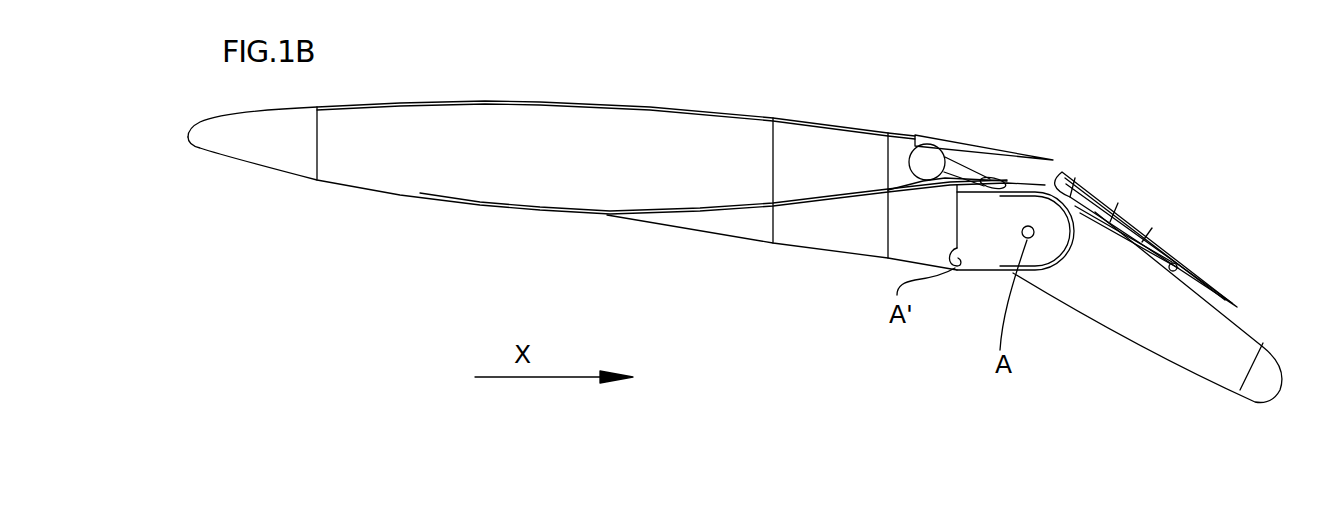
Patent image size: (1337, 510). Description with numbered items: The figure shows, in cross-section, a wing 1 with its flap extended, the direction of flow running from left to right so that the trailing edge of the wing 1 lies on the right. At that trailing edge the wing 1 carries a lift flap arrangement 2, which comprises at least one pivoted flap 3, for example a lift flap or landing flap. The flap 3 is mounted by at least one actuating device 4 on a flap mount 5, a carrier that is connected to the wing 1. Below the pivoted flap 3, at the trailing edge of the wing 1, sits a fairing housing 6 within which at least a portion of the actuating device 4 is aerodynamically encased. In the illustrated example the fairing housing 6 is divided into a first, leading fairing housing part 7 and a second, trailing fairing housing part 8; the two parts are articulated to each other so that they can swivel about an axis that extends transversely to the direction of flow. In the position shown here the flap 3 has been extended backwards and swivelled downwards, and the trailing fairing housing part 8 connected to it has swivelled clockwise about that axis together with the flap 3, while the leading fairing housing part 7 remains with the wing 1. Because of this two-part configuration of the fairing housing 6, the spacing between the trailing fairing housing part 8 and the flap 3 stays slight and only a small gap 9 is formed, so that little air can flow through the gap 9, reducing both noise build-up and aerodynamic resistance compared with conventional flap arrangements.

The wing 1 is at (484, 99).
The lift flap arrangement 2 is at (1087, 158).
The flap 3 is at (1138, 202).
The actuating device 4 is at (997, 171).
The flap mount 5 is at (832, 258).
The fairing housing 6 is at (1268, 331).
The leading fairing housing part 7 is at (980, 262).
The trailing fairing housing part 8 is at (1142, 300).
The gap 9 is at (1172, 244).